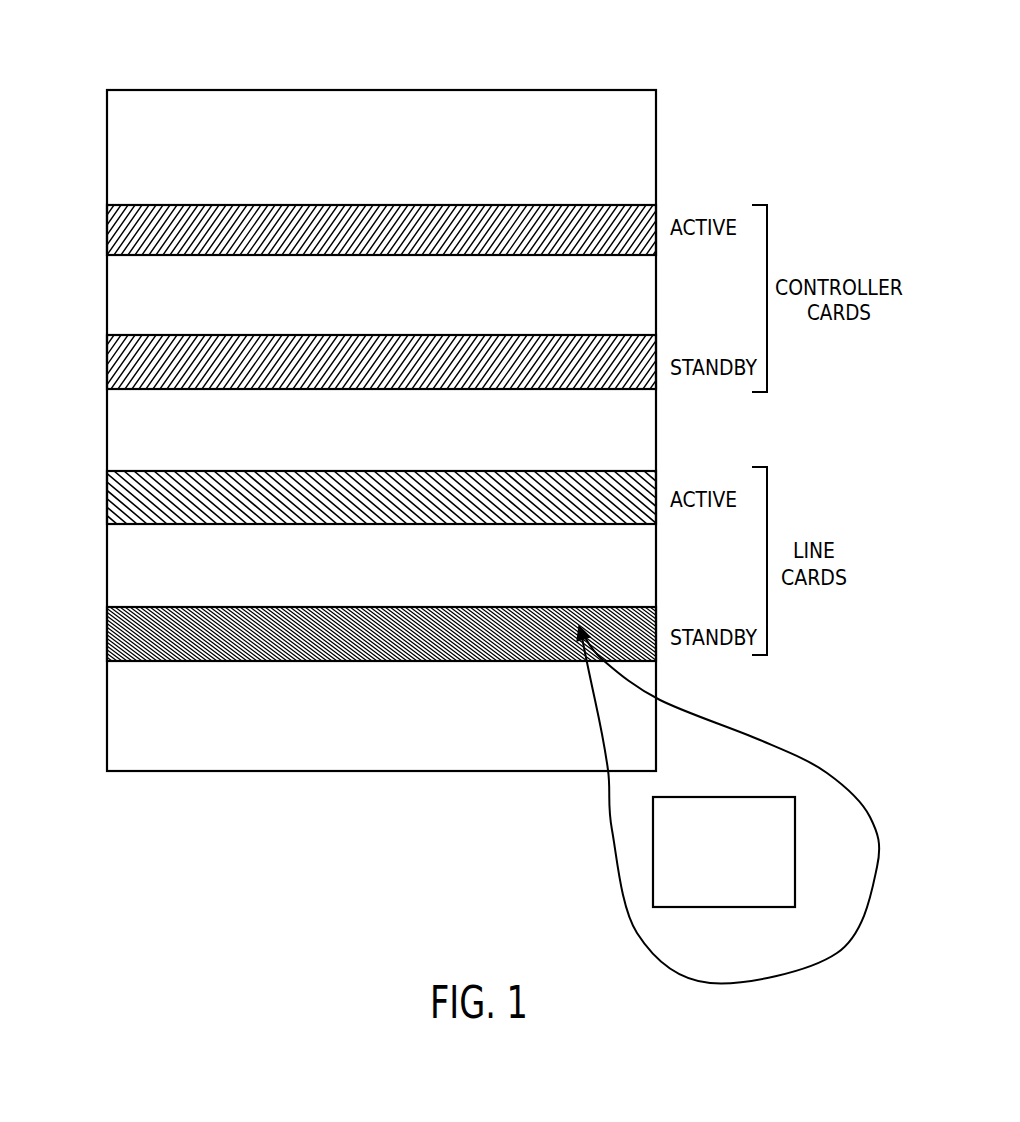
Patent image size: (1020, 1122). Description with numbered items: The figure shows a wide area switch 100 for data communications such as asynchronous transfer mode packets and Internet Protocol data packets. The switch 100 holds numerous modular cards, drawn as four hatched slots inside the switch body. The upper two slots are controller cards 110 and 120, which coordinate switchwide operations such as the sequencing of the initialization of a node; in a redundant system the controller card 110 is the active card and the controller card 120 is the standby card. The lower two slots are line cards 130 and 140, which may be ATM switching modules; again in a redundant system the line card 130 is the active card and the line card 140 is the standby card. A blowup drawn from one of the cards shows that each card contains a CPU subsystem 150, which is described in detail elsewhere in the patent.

The switch 100 is at (565, 90).
The controller card 110 is at (107, 228).
The controller card 120 is at (107, 369).
The line card 130 is at (107, 499).
The line card 140 is at (107, 630).
The CPU subsystem 150 is at (738, 907).